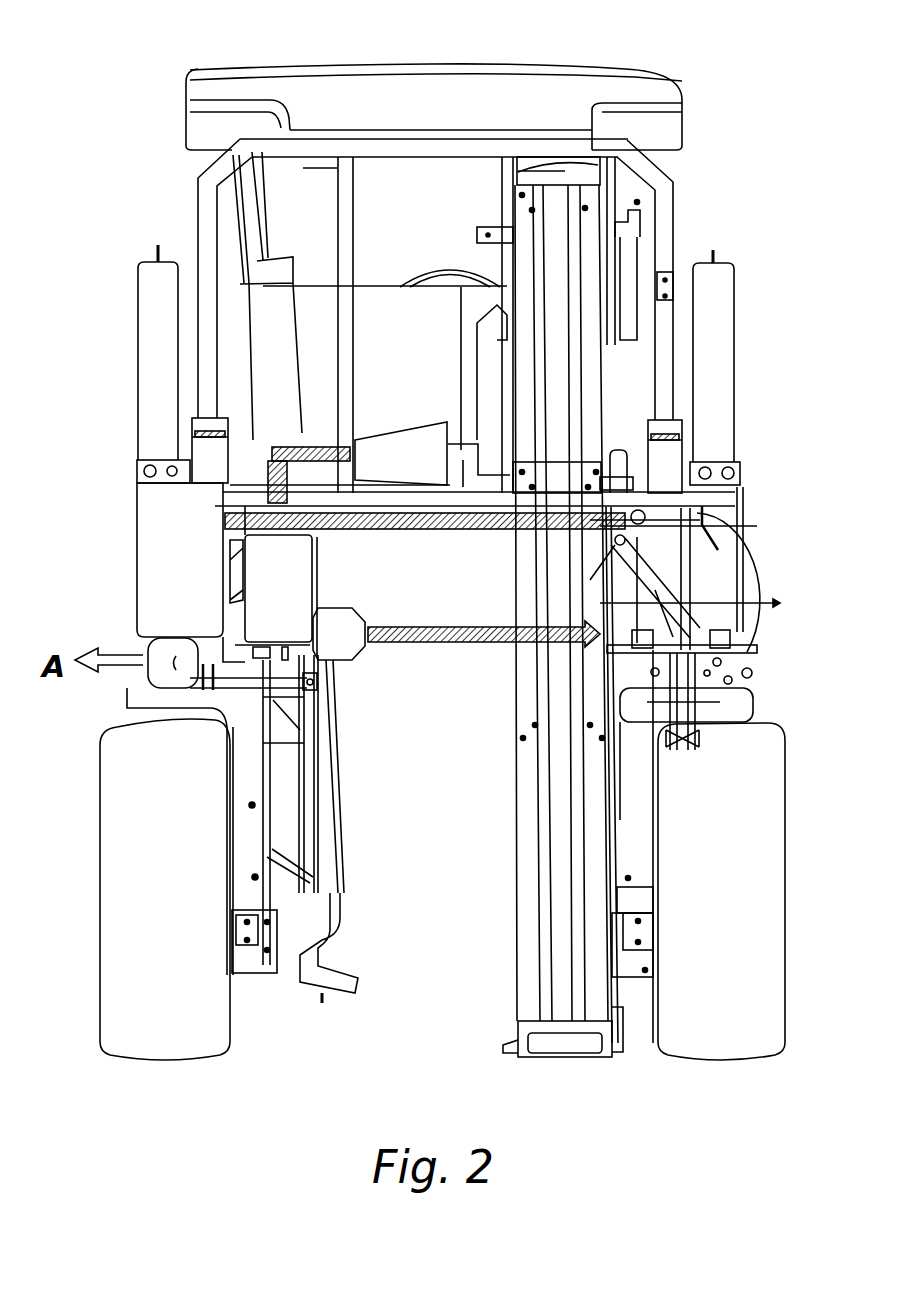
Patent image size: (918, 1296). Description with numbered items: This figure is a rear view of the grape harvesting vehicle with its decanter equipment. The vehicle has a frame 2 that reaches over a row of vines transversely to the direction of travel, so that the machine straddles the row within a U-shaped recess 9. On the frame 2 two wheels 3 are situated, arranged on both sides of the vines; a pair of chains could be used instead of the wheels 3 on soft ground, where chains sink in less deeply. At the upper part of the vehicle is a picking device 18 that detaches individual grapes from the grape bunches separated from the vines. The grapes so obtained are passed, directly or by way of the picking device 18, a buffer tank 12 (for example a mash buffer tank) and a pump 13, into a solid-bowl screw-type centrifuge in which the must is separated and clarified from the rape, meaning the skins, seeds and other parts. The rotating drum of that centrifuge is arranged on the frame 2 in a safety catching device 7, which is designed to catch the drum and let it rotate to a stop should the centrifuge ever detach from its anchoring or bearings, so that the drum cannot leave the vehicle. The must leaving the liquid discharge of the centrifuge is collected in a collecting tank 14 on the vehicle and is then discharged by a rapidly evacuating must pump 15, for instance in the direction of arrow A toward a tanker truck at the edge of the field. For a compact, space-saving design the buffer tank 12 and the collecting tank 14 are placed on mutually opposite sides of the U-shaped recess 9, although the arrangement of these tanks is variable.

The frame 2 is at (627, 807).
The wheels 3 is at (740, 977).
The safety catching device 7 is at (763, 566).
The U-shaped recess 9 is at (447, 966).
The buffer tank 12 is at (293, 568).
The pump 13 is at (343, 637).
The collecting tank 14 is at (170, 583).
The must pump 15 is at (130, 697).
The picking device 18 is at (412, 445).